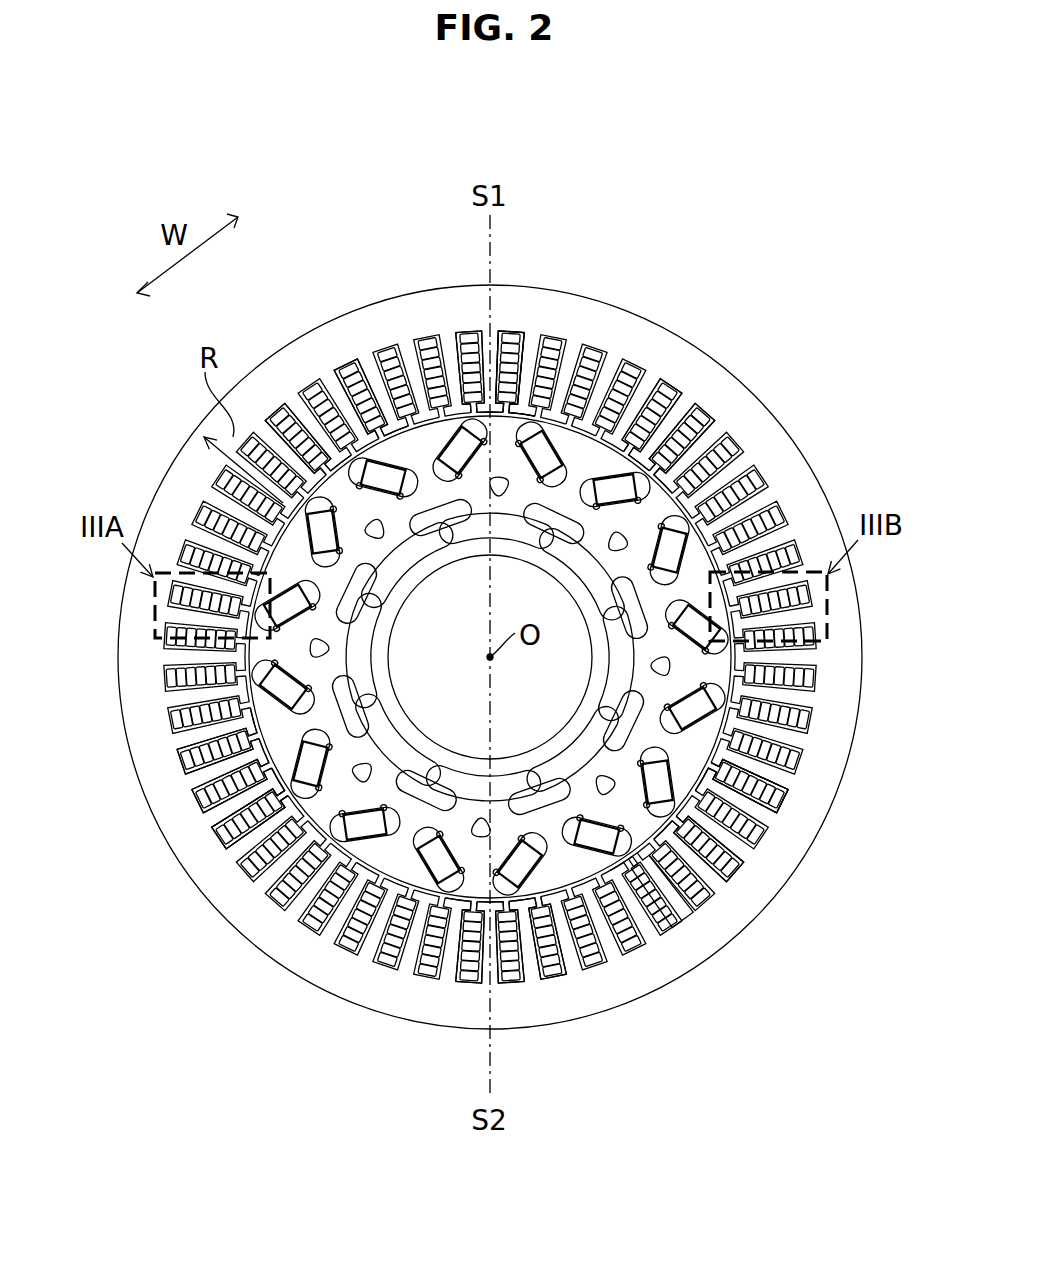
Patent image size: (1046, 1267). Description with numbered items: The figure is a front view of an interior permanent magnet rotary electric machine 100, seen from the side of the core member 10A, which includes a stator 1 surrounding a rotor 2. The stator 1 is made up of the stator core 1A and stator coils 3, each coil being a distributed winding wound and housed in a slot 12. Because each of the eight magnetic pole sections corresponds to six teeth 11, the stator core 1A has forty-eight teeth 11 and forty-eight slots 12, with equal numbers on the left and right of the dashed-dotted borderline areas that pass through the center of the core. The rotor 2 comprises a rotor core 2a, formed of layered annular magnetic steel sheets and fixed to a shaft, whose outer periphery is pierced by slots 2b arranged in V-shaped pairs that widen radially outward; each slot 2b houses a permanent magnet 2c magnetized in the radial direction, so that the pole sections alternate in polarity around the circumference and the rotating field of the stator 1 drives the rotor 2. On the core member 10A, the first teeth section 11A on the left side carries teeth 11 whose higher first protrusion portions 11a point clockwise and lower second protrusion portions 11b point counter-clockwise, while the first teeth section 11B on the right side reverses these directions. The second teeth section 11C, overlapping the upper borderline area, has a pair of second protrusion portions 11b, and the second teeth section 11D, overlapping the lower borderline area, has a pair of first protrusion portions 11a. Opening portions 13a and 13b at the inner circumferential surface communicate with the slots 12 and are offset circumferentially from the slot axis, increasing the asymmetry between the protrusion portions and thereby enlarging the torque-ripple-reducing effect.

The rotary electric machine 100 is at (760, 257).
The stator 1 is at (820, 463).
The stator core 1A is at (778, 413).
The core member 10A is at (846, 666).
The tooth 11 is at (333, 393).
The first protrusion portion 11a is at (263, 727).
The second protrusion portion 11b is at (465, 350).
The first teeth section 11A is at (223, 812).
The first teeth section 11B is at (776, 777).
The second teeth section 11C is at (494, 330).
The second teeth section 11D is at (496, 975).
The slot 12 is at (348, 367).
The stator coil 3 is at (333, 367).
The opening portion 13a is at (287, 397).
The opening portion 13b is at (718, 390).
The rotor 2 is at (731, 570).
The rotor core 2a is at (362, 852).
The slot 2b is at (348, 845).
The permanent magnet 2c is at (393, 860).